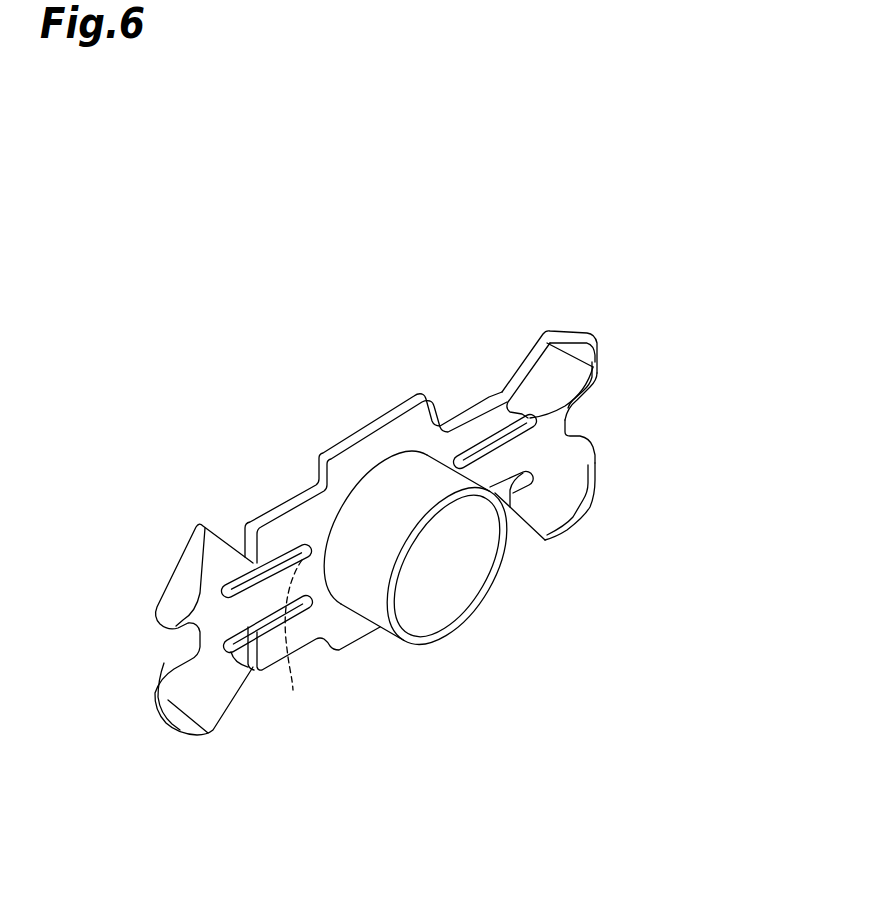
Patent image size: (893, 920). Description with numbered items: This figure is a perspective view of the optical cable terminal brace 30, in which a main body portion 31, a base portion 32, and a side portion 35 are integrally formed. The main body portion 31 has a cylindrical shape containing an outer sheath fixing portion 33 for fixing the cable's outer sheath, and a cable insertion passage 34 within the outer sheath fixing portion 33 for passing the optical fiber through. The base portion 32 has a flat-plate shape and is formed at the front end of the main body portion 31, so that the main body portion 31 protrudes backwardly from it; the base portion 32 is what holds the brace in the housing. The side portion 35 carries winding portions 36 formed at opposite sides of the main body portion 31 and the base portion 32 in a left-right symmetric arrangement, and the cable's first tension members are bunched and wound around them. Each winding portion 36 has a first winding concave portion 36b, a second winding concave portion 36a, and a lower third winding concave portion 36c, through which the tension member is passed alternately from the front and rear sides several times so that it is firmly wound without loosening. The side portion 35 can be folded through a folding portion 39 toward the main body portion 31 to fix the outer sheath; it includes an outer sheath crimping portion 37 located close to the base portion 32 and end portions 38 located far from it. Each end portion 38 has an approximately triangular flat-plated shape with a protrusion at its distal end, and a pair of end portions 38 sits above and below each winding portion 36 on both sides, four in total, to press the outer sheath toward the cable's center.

The optical cable terminal brace 30 is at (262, 280).
The main body portion 31 is at (438, 651).
The base portion 32 is at (333, 431).
The outer sheath fixing portion 33 is at (407, 467).
The cable insertion passage 34 is at (462, 595).
The side portion 35 is at (520, 342).
The winding portion 36 is at (695, 342).
The second winding concave portion 36a is at (598, 374).
The first winding concave portion 36b is at (569, 421).
The third winding concave portion 36c is at (533, 475).
The outer sheath crimping portion 37 is at (493, 462).
The end portion 38 is at (597, 334).
The folding portion 39 is at (286, 642).